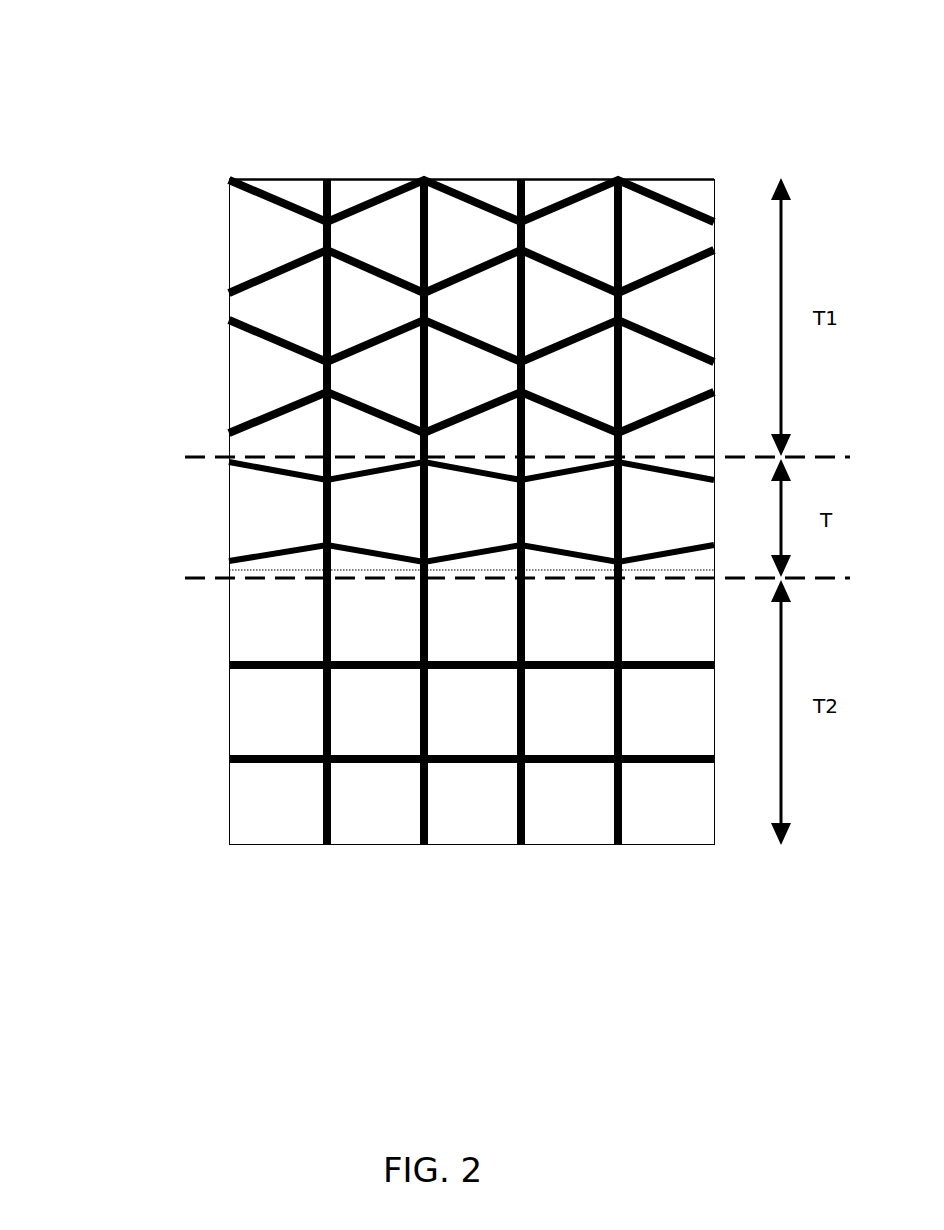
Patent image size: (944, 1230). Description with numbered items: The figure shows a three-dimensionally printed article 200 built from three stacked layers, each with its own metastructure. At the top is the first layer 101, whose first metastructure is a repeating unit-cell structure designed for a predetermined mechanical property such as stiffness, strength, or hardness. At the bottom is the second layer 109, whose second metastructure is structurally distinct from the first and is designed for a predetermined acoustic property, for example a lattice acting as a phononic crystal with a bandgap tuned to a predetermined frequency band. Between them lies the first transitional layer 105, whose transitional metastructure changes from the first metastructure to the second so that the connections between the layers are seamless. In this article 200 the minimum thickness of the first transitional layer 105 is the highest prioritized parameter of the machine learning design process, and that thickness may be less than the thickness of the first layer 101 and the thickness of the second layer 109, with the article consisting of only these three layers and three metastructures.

The 3D-printed article 200 is at (138, 79).
The first layer 101 is at (230, 293).
The first transitional layer 105 is at (230, 561).
The second layer 109 is at (230, 759).